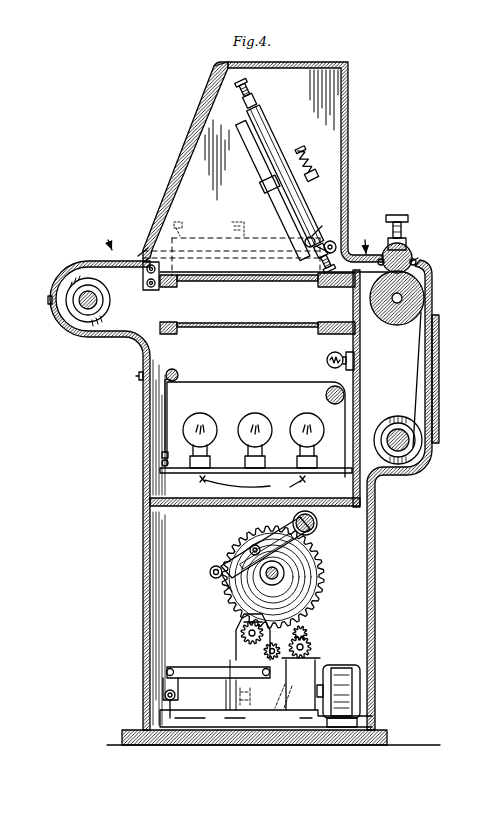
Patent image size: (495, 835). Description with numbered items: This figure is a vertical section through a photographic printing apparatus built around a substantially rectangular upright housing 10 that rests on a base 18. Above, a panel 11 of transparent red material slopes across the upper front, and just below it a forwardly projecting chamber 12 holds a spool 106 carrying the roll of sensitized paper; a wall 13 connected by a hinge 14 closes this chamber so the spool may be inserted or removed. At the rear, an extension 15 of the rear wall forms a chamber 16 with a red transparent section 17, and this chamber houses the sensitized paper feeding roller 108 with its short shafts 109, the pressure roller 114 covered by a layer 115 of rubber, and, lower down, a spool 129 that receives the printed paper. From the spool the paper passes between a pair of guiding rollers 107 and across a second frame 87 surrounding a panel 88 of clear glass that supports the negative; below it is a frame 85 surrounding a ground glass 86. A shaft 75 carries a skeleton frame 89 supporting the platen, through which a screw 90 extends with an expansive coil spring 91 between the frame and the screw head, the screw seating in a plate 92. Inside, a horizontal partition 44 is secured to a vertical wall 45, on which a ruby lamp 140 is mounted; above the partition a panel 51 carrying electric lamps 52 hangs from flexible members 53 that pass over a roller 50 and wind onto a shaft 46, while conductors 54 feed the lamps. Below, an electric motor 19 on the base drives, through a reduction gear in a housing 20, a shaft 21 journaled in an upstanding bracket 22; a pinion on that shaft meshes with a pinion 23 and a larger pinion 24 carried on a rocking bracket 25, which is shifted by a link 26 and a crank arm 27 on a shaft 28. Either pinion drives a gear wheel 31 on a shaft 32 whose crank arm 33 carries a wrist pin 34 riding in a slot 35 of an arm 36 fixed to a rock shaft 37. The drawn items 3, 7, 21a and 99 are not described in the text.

The roller block 3 is at (142, 264).
The section line 7 is at (233, 240).
The housing 10 is at (140, 626).
The panel 11 is at (190, 150).
The chamber 12 is at (126, 332).
The wall 13 is at (74, 330).
The hinge 14 is at (136, 378).
The rear wall extension 15 is at (433, 286).
The chamber 16 is at (396, 370).
The section of red transparent material 17 is at (440, 386).
The base 18 is at (310, 744).
The electric motor 19 is at (345, 668).
The reduction gear housing 20 is at (236, 638).
The shaft 21 is at (318, 658).
The pinion 21a is at (262, 653).
The bracket 22 is at (272, 708).
The pinion 23 is at (246, 626).
The larger pinion 24 is at (306, 630).
The bracket 25 is at (310, 645).
The link 26 is at (222, 682).
The crank arm 27 is at (162, 684).
The shaft 28 is at (178, 706).
The gear wheel 31 is at (320, 570).
The shaft 32 is at (282, 574).
The crank arm 33 is at (290, 553).
The wrist pin 34 is at (250, 548).
The slot 35 is at (210, 572).
The arm 36 is at (222, 576).
The rock shaft 37 is at (317, 523).
The partition 44 is at (180, 504).
The vertical wall 45 is at (361, 394).
The shaft 46 is at (175, 370).
The roller 50 is at (326, 395).
The panel 51 is at (224, 468).
The electric lamps 52 is at (305, 428).
The flexible members 53 is at (167, 402).
The conductors 54 is at (252, 484).
The shaft 75 is at (336, 244).
The frame 85 is at (338, 322).
The ground glass 86 is at (280, 326).
The second frame 87 is at (170, 288).
The panel of clear glass 88 is at (242, 283).
The skeleton frame 89 is at (275, 132).
The screw 90 is at (312, 160).
The expansive coil spring 91 is at (310, 168).
The plate 92 is at (268, 176).
The adjusting screws 99 is at (278, 100).
The spool 106 is at (80, 290).
The guiding rollers 107 is at (140, 250).
The sensitized paper feeding roller 108 is at (402, 300).
The short shafts 109 is at (420, 264).
The pressure roller 114 is at (408, 252).
The layer of flexible material 115 is at (405, 240).
The spool 129 is at (412, 452).
The ruby lamp 140 is at (326, 362).